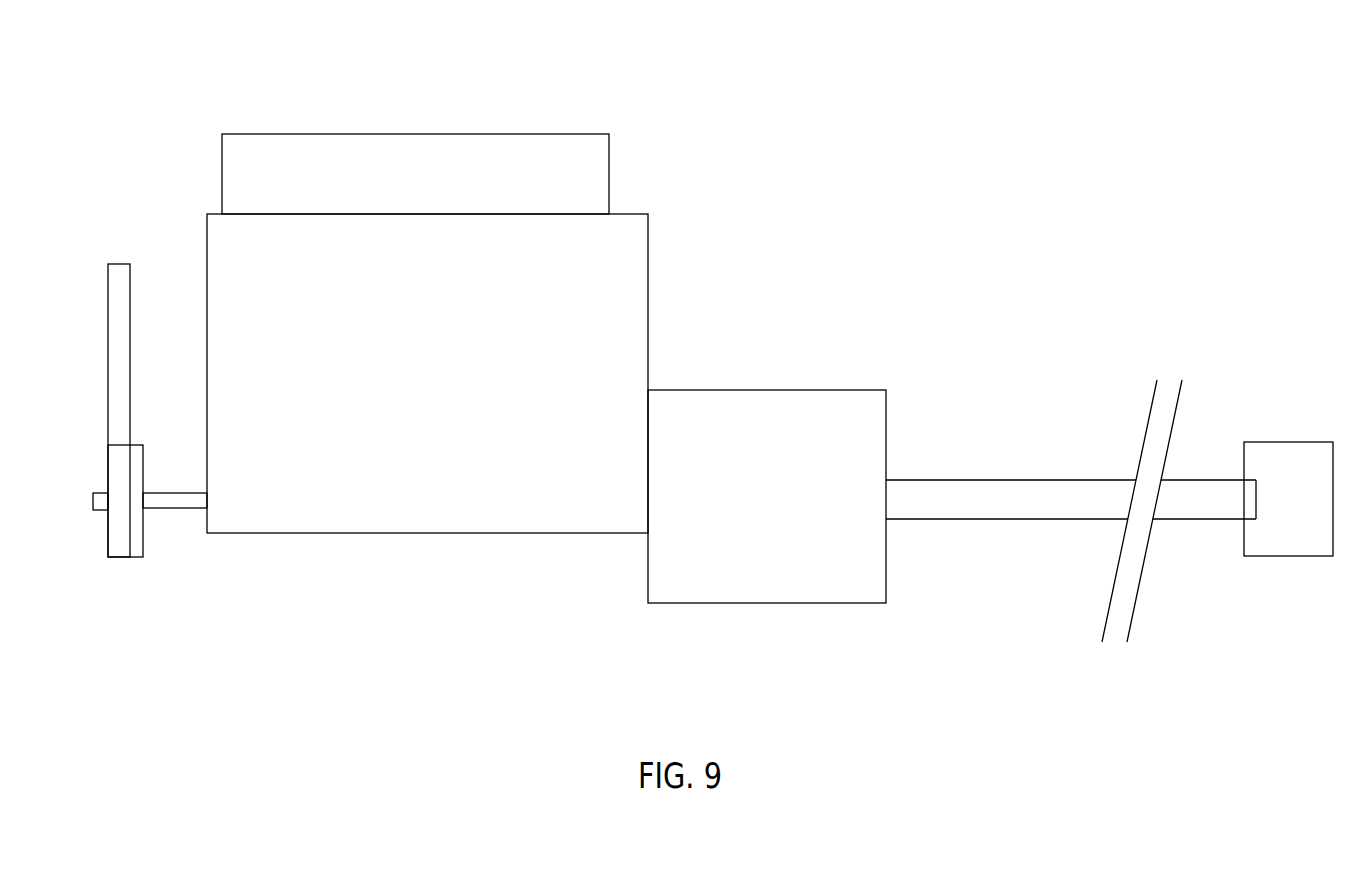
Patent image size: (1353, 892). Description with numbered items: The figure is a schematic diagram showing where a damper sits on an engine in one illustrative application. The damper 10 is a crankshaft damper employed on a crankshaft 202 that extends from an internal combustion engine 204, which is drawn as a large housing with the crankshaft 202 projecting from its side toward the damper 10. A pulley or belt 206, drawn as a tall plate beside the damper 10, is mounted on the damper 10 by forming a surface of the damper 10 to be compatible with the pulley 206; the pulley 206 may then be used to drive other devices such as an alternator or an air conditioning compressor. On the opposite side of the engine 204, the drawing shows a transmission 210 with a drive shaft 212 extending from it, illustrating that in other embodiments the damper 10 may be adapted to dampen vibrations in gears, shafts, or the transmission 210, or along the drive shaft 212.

The damper 10 is at (143, 538).
The crankshaft 202 is at (178, 493).
The internal combustion engine 204 is at (412, 533).
The pulley or belt 206 is at (106, 345).
The transmission 210 is at (756, 390).
The drive shaft 212 is at (988, 480).